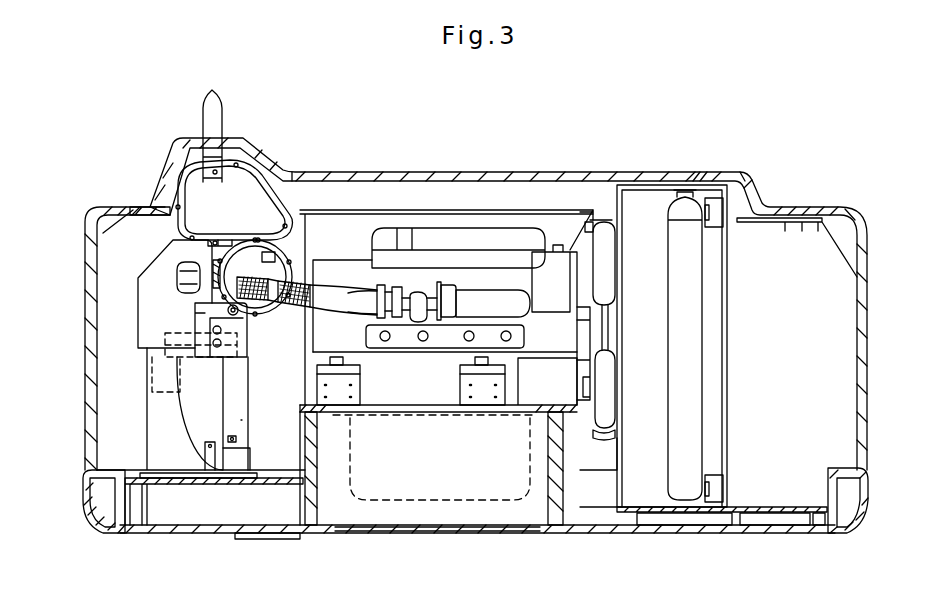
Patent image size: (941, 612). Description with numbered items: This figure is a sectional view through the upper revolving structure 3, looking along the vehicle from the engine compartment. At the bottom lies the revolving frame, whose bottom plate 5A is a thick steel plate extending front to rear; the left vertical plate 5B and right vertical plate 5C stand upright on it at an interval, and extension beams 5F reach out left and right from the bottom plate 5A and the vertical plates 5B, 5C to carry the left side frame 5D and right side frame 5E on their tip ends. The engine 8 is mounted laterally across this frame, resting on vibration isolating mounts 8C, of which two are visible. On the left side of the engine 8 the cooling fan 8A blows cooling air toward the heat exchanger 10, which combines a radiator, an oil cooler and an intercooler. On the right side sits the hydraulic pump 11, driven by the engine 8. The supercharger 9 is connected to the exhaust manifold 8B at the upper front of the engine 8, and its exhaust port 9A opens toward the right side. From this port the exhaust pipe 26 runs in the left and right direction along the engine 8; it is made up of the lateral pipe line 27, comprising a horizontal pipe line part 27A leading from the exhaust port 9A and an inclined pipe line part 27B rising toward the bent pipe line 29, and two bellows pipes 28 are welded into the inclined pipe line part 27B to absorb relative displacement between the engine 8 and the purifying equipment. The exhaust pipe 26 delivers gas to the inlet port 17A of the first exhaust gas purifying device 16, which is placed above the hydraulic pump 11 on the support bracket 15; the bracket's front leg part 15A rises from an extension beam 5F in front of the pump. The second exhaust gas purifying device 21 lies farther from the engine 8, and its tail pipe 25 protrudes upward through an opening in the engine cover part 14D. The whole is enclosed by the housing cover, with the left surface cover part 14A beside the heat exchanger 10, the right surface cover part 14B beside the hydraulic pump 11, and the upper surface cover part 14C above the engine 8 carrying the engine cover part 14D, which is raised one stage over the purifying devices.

The upper revolving structure 3 is at (569, 160).
The bottom plate 5A is at (506, 530).
The left vertical plate 5B is at (575, 505).
The right vertical plate 5C is at (303, 498).
The left side frame 5D is at (858, 517).
The right side frame 5E is at (92, 505).
The extension beam 5F is at (175, 497).
The engine 8 is at (493, 268).
The cooling fan 8A is at (604, 250).
The exhaust manifold 8B is at (517, 300).
The vibration isolating mount 8C is at (340, 382).
The supercharger 9 is at (417, 297).
The exhaust port 9A is at (390, 297).
The heat exchanger 10 is at (686, 260).
The hydraulic pump 11 is at (203, 392).
The left surface cover part 14A is at (868, 373).
The right surface cover part 14B is at (95, 342).
The upper surface cover part 14C is at (140, 207).
The engine cover part 14D is at (452, 173).
The support bracket 15 is at (160, 432).
The front leg part 15A is at (175, 372).
The first exhaust gas purifying device 16 is at (215, 243).
The inlet port 17A is at (185, 247).
The second exhaust gas purifying device 21 is at (200, 197).
The tail pipe 25 is at (213, 112).
The exhaust pipe 26 is at (338, 275).
The lateral pipe line 27 is at (225, 285).
The horizontal pipe line part 27A is at (354, 297).
The inclined pipe line part 27B is at (265, 250).
The bellows pipe 28 is at (255, 240).
The bent pipe line 29 is at (178, 278).